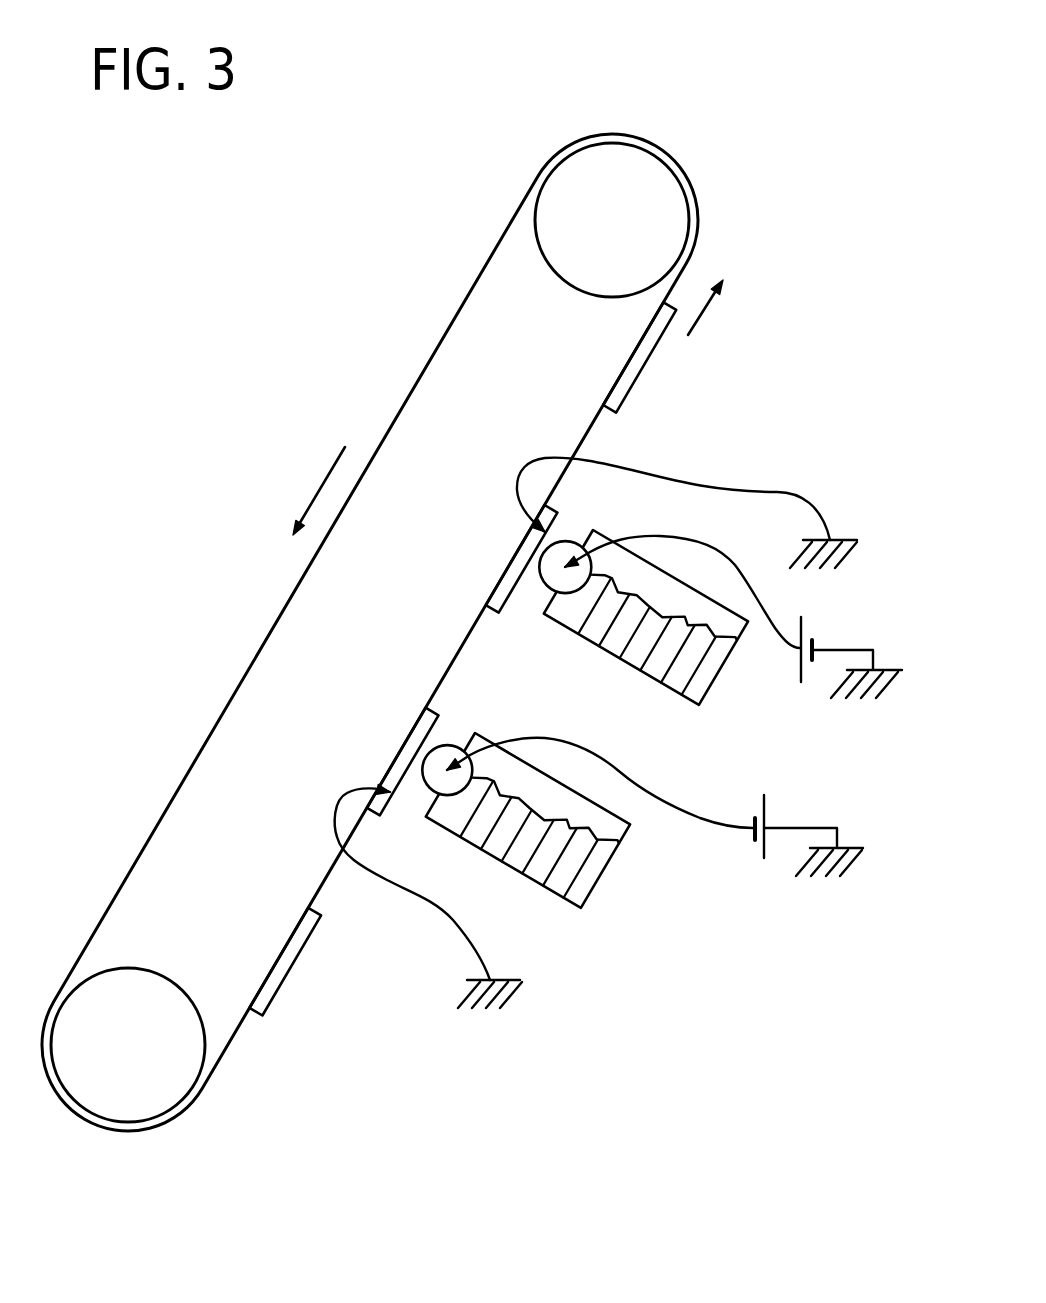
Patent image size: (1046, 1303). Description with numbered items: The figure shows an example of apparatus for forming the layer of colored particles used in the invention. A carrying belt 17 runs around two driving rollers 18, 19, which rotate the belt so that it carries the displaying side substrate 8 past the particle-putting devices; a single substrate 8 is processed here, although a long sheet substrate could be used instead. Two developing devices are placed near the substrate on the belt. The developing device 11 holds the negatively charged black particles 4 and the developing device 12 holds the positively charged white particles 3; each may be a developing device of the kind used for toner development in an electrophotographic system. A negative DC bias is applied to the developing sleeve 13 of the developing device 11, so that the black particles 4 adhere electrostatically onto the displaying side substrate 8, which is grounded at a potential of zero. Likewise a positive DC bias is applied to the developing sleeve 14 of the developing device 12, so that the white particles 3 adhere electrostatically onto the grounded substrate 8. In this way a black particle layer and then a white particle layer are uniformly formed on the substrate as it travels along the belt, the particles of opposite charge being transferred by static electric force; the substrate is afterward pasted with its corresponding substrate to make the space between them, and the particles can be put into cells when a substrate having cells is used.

The white particles 3 is at (690, 672).
The black particles 4 is at (583, 870).
The displaying side substrate 8 is at (647, 342).
The developing device for black particles 11 is at (642, 811).
The developing device for white particles 12 is at (720, 634).
The developing sleeve 13 is at (445, 750).
The developing sleeve 14 is at (562, 543).
The carrying belt 17 is at (228, 700).
The driving roller 18 is at (112, 1090).
The driving roller 19 is at (643, 183).